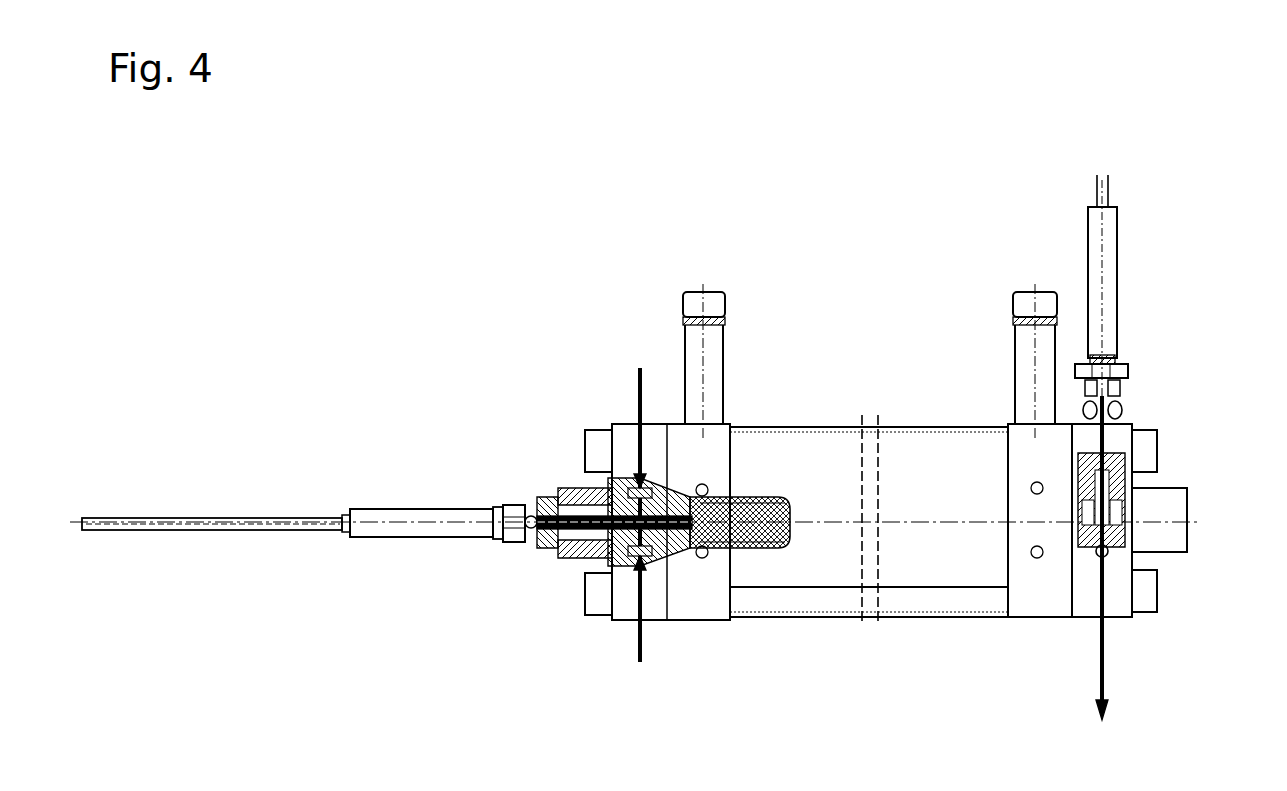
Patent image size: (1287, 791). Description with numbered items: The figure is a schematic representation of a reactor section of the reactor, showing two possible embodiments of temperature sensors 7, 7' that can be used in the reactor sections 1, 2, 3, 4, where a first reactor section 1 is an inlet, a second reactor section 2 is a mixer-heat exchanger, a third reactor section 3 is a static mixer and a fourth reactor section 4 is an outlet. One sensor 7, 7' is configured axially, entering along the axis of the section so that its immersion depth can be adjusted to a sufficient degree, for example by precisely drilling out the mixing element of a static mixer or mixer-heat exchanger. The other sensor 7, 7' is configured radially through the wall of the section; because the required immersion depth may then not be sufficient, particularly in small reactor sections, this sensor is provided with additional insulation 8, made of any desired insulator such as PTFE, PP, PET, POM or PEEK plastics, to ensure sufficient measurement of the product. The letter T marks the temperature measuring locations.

The first reactor section 1 is at (862, 509).
The second reactor section 2 is at (862, 509).
The third reactor section 3 is at (862, 509).
The fourth reactor section 4 is at (843, 570).
The first temperature sensor 7 is at (316, 609).
The second temperature sensor 7' is at (1167, 447).
The insulation 8 is at (1133, 470).
The temperature measuring point T is at (747, 500).